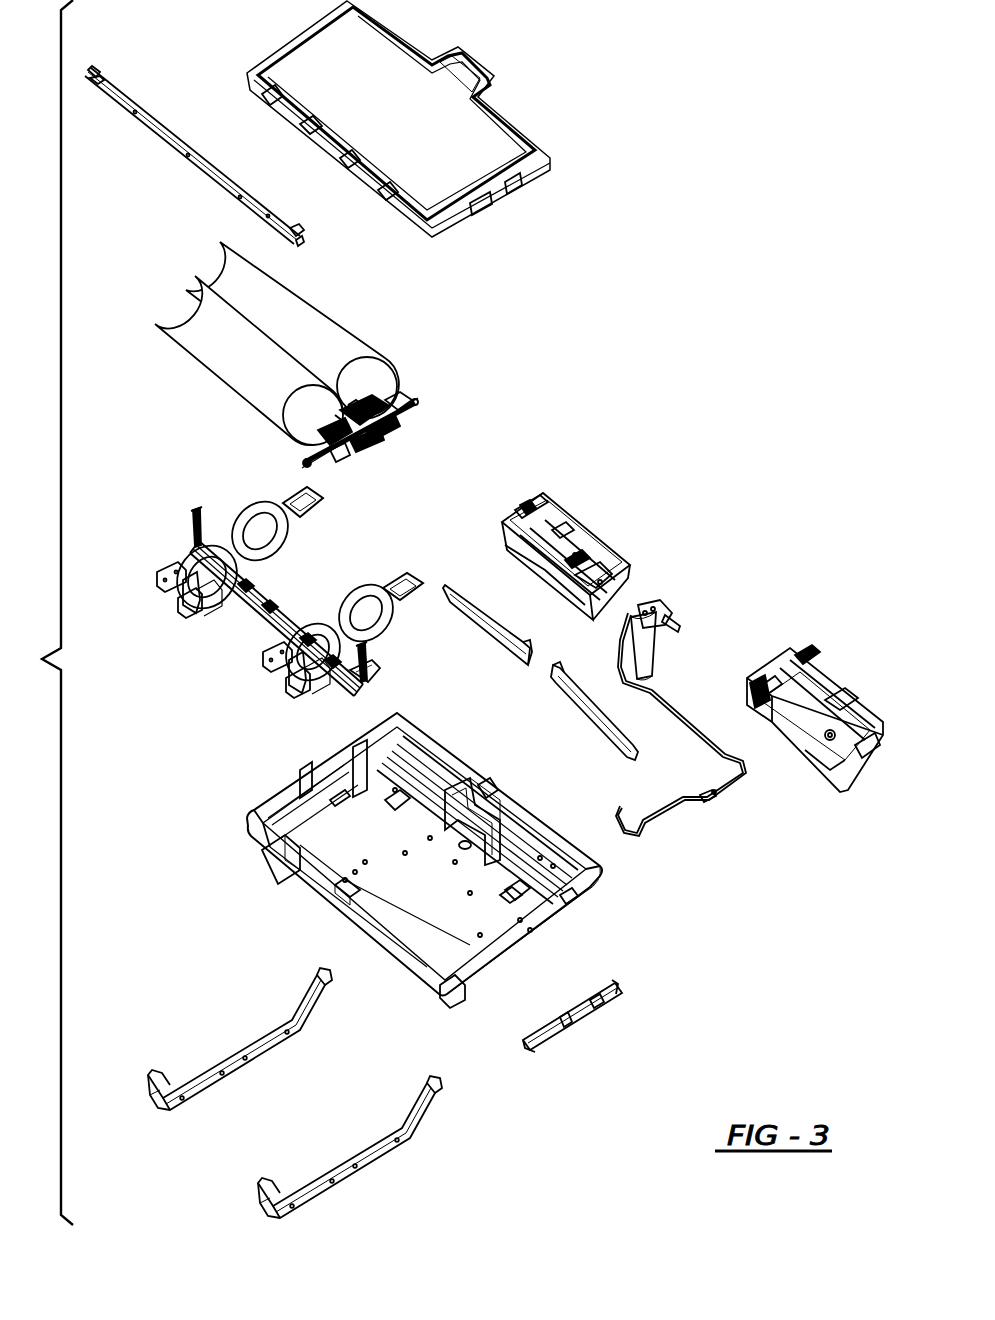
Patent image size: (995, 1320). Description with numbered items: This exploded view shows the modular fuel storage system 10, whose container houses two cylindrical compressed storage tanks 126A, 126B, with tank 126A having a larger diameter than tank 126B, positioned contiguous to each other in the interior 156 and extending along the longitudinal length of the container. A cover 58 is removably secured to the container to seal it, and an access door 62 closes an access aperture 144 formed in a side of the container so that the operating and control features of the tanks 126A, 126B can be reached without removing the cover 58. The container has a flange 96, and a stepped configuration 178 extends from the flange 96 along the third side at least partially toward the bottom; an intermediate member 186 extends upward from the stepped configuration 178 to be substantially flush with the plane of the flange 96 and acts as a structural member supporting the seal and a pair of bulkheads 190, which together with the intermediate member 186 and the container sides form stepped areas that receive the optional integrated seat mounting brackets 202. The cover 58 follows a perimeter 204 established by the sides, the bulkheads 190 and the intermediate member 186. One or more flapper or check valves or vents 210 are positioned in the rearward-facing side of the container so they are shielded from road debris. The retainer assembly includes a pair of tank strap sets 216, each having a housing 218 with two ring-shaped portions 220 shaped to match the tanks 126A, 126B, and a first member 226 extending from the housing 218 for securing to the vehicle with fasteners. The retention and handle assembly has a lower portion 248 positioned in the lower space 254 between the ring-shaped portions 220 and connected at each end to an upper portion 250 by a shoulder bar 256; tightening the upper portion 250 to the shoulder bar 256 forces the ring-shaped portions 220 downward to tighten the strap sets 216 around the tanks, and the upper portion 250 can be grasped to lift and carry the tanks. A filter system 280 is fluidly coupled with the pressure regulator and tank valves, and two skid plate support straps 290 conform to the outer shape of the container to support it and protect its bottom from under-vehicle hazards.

The modular fuel storage system 10 is at (45, 612).
The cover 58 is at (425, 119).
The access door 62 is at (577, 1023).
The flange 96 is at (323, 760).
The storage tank 126A is at (303, 325).
The storage tank 126B is at (210, 343).
The access aperture 144 is at (453, 870).
The interior 156 is at (313, 843).
The stepped configuration 178 is at (547, 874).
The intermediate member 186 is at (460, 800).
The bulkheads 190 is at (472, 607).
The seat mounting brackets 202 is at (557, 543).
The perimeter 204 is at (522, 132).
The valves/vents 210 is at (393, 798).
The tank strap sets 216 is at (190, 603).
The housing 218 is at (207, 610).
The ring-shaped portions 220 is at (277, 540).
The first member 226 is at (173, 580).
The lower portion 248 is at (270, 592).
The upper portion 250 is at (167, 130).
The lower space 254 is at (373, 680).
The shoulder bar 256 is at (193, 518).
The filter system 280 is at (657, 657).
The skid plate support straps 290 is at (230, 1057).